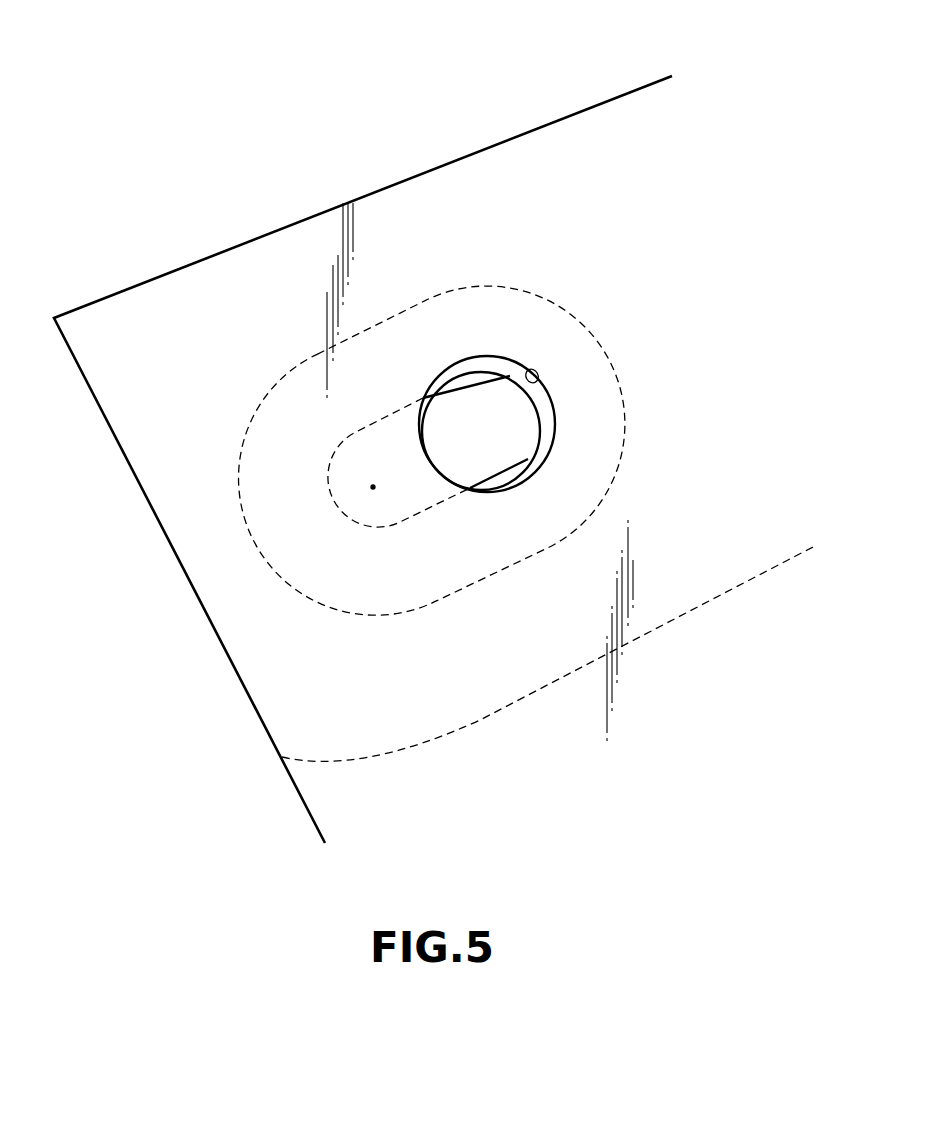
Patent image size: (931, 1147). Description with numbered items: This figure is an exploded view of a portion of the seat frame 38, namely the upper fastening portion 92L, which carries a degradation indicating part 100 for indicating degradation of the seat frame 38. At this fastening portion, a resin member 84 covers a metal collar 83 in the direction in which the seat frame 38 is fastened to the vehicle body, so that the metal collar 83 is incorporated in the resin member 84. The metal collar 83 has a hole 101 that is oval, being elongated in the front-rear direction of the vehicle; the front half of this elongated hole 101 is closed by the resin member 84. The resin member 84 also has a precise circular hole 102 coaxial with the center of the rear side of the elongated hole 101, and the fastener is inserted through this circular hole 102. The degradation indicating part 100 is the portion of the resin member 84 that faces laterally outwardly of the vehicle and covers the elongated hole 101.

The seat frame 38 is at (393, 183).
The upper fastening portion 92L is at (462, 267).
The degradation indicating part 100 is at (328, 427).
The hole 101 is at (483, 478).
The circular hole 102 is at (537, 382).
The metal collar 83 is at (243, 478).
The resin member 84 is at (373, 487).